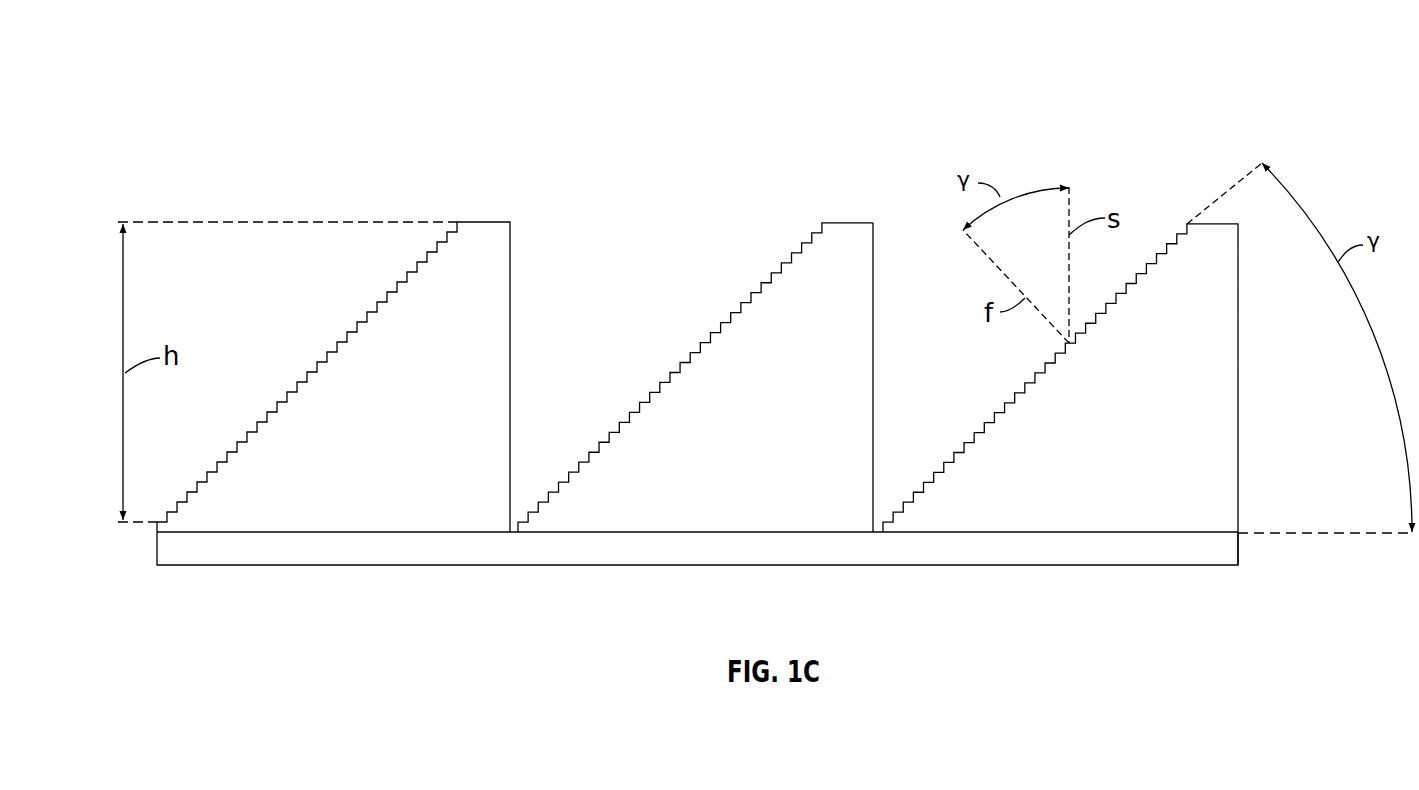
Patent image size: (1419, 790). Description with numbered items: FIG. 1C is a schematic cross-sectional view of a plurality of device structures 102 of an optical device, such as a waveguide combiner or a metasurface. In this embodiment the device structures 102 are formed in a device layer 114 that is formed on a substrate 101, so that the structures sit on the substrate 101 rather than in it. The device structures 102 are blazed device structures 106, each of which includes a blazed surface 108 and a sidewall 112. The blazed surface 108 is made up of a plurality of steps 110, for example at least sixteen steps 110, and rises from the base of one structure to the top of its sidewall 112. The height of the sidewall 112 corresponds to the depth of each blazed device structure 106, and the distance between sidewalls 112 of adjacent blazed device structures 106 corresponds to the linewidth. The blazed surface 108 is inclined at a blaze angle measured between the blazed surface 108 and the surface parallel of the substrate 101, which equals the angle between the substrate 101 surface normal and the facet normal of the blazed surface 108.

The substrate 101 is at (1170, 548).
The device structures 102 is at (728, 312).
The blazed device structures 106 is at (1222, 365).
The blazed surface 108 is at (318, 365).
The steps 110 is at (689, 342).
The sidewall 112 is at (875, 300).
The device layer 114 is at (1217, 512).